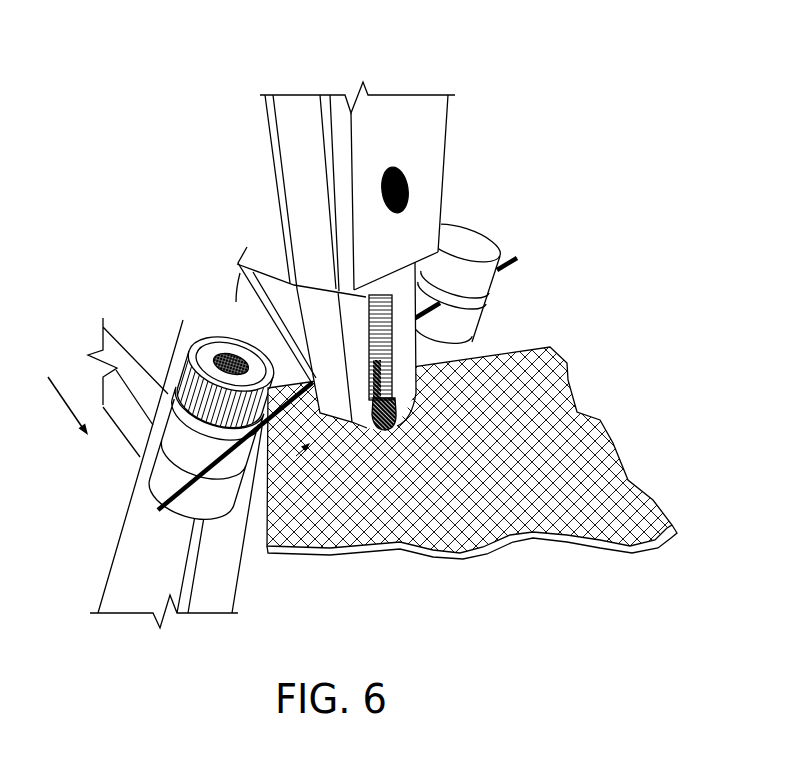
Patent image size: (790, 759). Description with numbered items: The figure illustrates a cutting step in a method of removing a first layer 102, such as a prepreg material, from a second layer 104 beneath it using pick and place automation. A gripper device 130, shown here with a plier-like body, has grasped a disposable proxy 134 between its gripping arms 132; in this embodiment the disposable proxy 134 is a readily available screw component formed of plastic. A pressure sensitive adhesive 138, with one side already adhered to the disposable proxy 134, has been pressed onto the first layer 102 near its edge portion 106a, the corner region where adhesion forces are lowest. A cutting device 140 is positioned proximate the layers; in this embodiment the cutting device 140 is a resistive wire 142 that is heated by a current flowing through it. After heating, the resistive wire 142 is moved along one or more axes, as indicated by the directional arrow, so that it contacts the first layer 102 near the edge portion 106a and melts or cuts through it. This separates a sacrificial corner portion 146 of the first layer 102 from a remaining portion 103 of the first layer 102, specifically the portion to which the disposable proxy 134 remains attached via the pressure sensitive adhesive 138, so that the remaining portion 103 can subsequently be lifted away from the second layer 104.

The gripper device 130 is at (446, 151).
The gripping arms 132 is at (306, 307).
The sacrificial corner portion 146 is at (286, 386).
The disposable proxy 134 is at (477, 355).
The pressure sensitive adhesive 138 is at (395, 386).
The first layer 102 is at (570, 388).
The remaining portion 103 is at (613, 457).
The second layer 104 is at (475, 557).
The edge portion 106a is at (300, 452).
The cutting device 140 is at (155, 328).
The resistive wire 142 is at (165, 495).